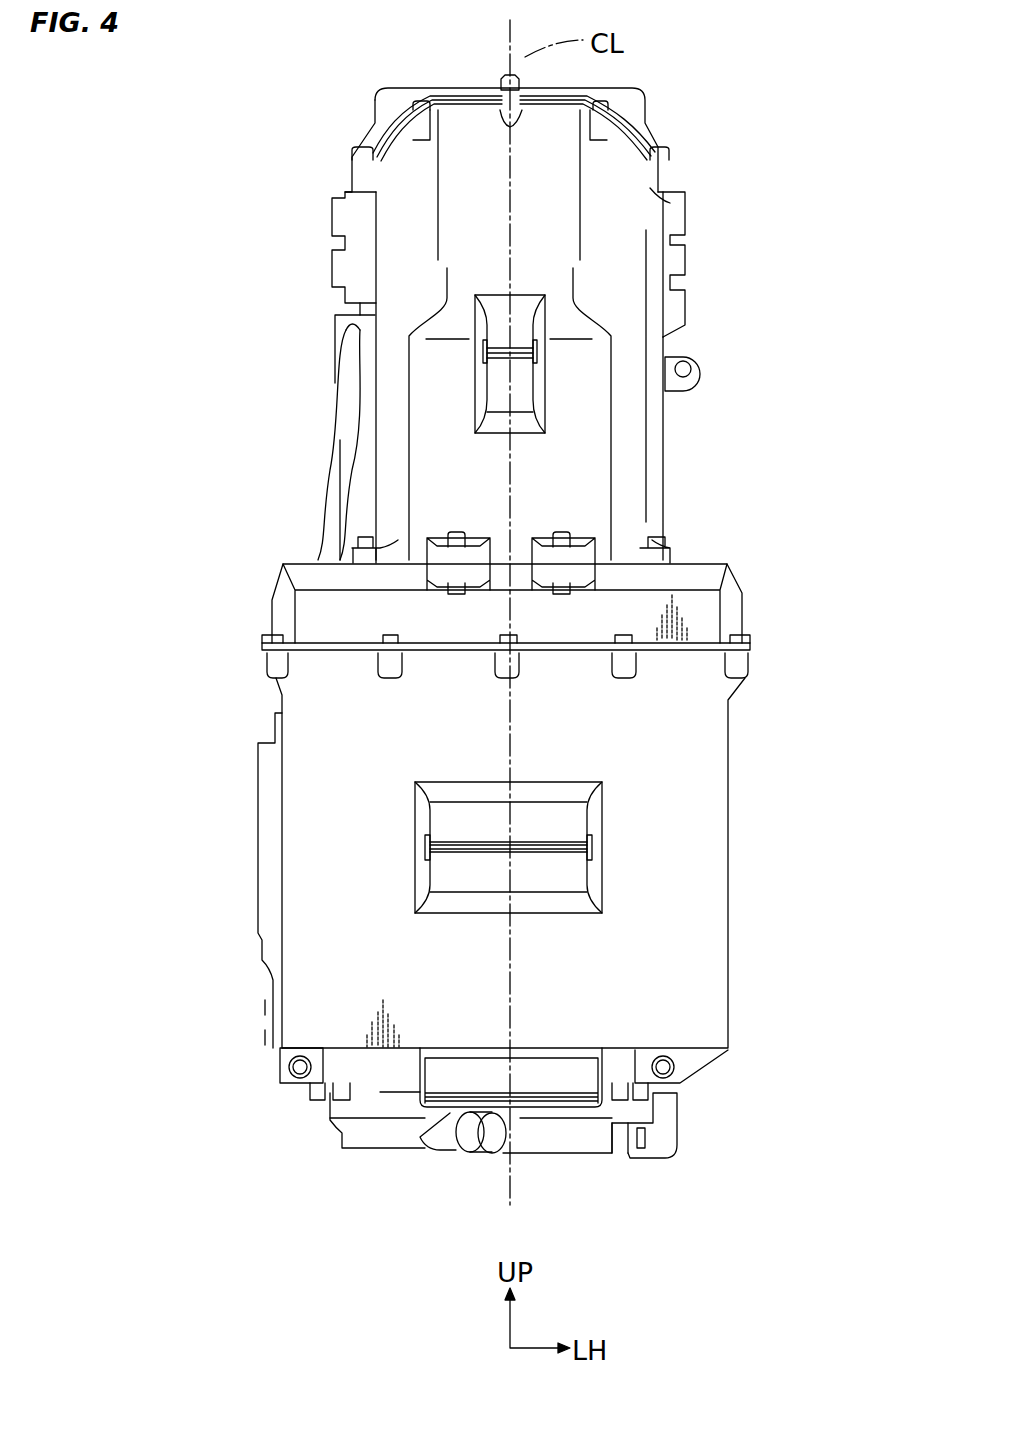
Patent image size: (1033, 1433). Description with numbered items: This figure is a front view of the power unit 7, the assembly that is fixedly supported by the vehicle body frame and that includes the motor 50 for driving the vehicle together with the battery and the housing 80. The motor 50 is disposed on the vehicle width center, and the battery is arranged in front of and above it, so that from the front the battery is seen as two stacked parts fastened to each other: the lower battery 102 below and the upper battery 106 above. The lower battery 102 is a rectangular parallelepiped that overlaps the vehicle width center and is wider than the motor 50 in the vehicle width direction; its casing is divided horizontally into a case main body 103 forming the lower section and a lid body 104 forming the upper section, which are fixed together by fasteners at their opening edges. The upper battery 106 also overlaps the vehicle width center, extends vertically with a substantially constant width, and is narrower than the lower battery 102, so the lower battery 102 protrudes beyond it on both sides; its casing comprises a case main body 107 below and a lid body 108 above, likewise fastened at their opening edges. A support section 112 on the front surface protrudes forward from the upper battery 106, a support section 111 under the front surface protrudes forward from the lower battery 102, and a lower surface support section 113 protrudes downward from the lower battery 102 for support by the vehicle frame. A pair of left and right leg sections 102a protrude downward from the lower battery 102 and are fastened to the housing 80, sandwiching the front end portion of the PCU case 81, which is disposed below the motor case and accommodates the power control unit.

The power unit 7 is at (262, 68).
The motor 50 is at (748, 178).
The lid body 108 is at (633, 98).
The upper battery 106 is at (325, 222).
The case main body 107 is at (637, 272).
The support section on the front surface 112 is at (478, 386).
The lid body 104 is at (710, 615).
The lower battery 102 is at (740, 785).
The case main body 103 is at (713, 935).
The support section under the front surface 111 is at (418, 823).
The leg sections 102a is at (297, 1085).
The lower surface support section 113 is at (568, 1088).
The PCU case 81 is at (383, 1158).
The housing 80 is at (503, 1172).